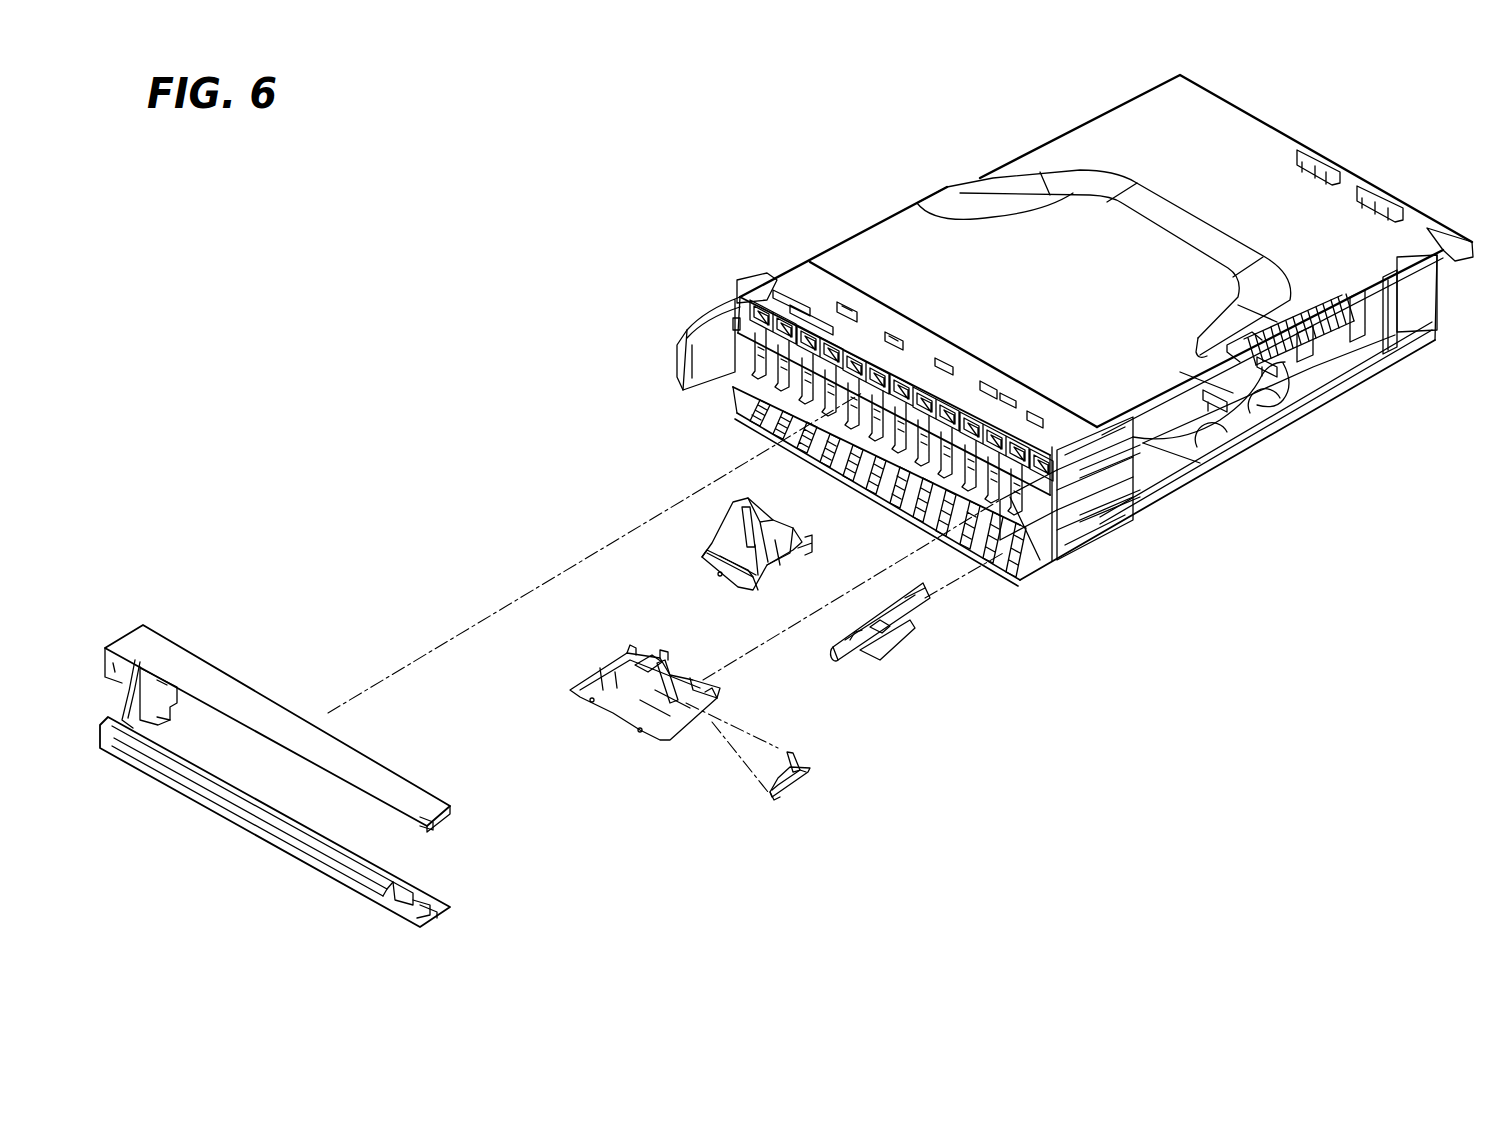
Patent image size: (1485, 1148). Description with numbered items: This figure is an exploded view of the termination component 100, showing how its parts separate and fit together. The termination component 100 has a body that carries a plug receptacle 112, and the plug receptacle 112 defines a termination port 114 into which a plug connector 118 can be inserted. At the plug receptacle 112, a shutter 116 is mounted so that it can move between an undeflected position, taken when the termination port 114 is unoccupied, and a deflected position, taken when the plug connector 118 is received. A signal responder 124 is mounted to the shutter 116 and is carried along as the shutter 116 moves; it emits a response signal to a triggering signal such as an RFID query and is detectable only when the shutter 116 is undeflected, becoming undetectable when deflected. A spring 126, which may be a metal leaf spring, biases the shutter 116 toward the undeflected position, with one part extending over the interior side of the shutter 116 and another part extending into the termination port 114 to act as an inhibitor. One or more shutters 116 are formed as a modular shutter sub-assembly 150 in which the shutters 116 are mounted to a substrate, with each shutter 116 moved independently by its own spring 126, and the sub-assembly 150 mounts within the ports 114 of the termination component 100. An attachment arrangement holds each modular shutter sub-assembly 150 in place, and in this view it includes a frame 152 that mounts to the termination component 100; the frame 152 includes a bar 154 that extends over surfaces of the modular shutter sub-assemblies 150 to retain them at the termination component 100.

The termination component 100 is at (852, 238).
The plug receptacle 112 is at (1048, 522).
The termination port 114 is at (887, 437).
The shutter 116 is at (733, 535).
The plug connector 118 is at (903, 633).
The signal responder 124 is at (797, 753).
The spring 126 is at (800, 783).
The modular shutter sub-assembly 150 is at (703, 560).
The frame 152 is at (242, 680).
The bar 154 is at (260, 807).